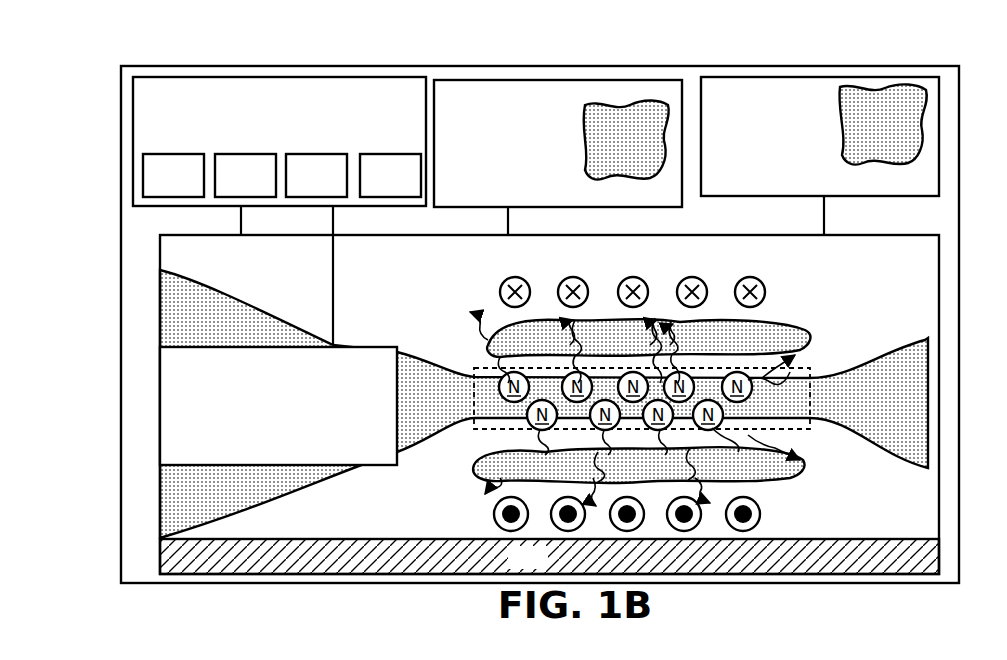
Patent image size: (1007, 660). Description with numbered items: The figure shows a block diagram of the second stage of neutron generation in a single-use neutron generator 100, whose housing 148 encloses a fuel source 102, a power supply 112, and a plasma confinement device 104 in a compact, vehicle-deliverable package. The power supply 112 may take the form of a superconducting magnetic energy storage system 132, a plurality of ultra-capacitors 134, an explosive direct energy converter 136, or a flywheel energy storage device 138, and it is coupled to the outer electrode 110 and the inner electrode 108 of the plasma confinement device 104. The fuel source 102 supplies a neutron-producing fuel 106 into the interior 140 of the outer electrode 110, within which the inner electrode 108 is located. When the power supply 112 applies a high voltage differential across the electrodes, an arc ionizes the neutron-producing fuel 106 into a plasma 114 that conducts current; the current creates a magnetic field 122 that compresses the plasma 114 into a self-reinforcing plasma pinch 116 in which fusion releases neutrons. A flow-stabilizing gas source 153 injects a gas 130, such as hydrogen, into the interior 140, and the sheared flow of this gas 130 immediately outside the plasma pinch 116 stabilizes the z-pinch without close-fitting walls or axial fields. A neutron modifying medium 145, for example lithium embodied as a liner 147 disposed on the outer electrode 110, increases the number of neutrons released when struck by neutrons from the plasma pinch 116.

The single-use neutron generator 100 is at (126, 30).
The housing 148 is at (636, 60).
The power supply 112 is at (262, 132).
The superconducting magnetic energy storage system 132 is at (155, 187).
The plurality of ultra-capacitors 134 is at (227, 187).
The explosive direct energy converter 136 is at (298, 187).
The flywheel energy storage device 138 is at (372, 187).
The fuel source 102 is at (567, 151).
The neutron-producing fuel 106 is at (609, 151).
The flow-stabilizing gas source 153 is at (752, 187).
The gas 130 is at (864, 136).
The outer electrode 110 is at (205, 235).
The plasma confinement device 104 is at (860, 230).
The interior 140 is at (872, 271).
The inner electrode 108 is at (260, 429).
The plasma 114 is at (293, 489).
The plasma pinch 116 is at (811, 428).
The magnetic field 122 is at (708, 282).
The neutron modifying medium 145 is at (388, 580).
The liner 147 is at (510, 567).